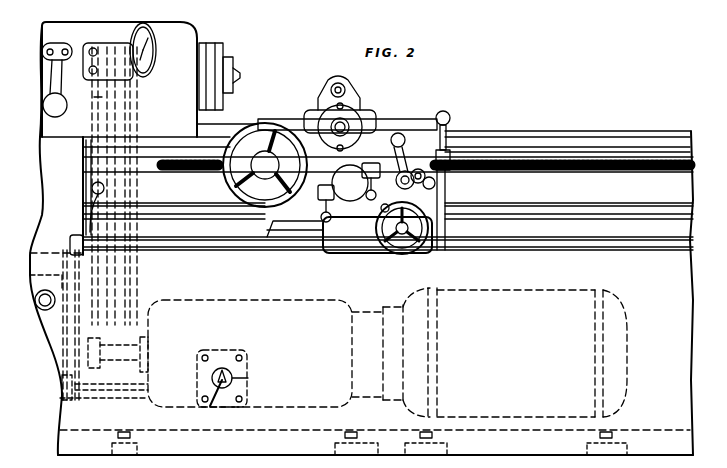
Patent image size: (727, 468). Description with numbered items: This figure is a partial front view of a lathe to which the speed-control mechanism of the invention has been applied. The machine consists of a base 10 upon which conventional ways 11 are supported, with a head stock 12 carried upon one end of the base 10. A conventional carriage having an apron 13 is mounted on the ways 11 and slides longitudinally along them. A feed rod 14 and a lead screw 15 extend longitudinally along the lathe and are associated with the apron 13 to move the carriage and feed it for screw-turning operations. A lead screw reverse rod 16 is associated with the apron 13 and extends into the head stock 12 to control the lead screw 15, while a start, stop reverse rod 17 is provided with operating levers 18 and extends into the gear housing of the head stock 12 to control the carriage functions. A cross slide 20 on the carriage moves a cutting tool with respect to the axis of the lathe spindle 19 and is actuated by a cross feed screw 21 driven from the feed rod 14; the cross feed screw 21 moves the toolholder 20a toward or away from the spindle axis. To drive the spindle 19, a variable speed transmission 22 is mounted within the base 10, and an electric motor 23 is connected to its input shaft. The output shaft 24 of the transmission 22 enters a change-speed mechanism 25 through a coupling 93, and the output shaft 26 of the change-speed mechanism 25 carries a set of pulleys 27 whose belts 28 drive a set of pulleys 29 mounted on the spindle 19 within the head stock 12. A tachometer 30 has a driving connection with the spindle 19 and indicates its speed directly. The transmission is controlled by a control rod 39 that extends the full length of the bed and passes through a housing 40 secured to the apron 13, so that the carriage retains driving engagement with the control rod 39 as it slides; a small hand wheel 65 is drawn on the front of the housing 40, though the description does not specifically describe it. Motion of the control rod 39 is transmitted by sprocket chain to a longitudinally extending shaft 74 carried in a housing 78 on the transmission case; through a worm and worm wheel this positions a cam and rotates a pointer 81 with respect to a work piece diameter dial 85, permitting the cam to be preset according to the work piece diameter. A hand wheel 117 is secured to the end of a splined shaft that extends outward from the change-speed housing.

The base 10 is at (485, 273).
The ways 11 is at (214, 143).
The head stock 12 is at (192, 47).
The apron 13 is at (304, 131).
The feed rod 14 is at (197, 216).
The lead screw 15 is at (172, 172).
The lead screw reverse rod 16 is at (490, 136).
The start, stop reverse rod 17 is at (150, 220).
The operating levers 18 is at (436, 184).
The lathe spindle 19 is at (240, 76).
The cross slide 20 is at (355, 102).
The toolholder 20a is at (342, 83).
The cross feed screw 21 is at (348, 122).
The variable speed transmission 22 is at (257, 311).
The electric motor 23 is at (455, 298).
The output shaft 24 is at (124, 366).
The change-speed mechanism 25 is at (58, 290).
The output shaft 26 is at (80, 258).
The pulleys 27 is at (140, 298).
The belts 28 is at (138, 283).
The pulleys 29 is at (92, 100).
The tachometer 30 is at (147, 31).
The control rod 39 is at (286, 251).
The housing 40 is at (351, 255).
The handwheel 65 is at (411, 215).
The longitudinally extending shaft 74 is at (107, 396).
The housing 78 is at (226, 352).
The pointer 81 is at (213, 398).
The work piece diameter dial 85 is at (249, 379).
The coupling 93 is at (98, 346).
The hand wheel 117 is at (47, 311).